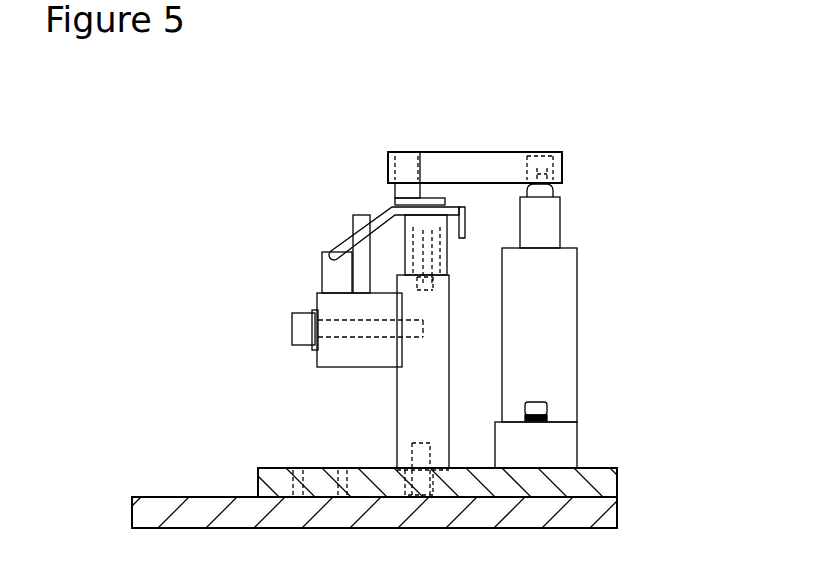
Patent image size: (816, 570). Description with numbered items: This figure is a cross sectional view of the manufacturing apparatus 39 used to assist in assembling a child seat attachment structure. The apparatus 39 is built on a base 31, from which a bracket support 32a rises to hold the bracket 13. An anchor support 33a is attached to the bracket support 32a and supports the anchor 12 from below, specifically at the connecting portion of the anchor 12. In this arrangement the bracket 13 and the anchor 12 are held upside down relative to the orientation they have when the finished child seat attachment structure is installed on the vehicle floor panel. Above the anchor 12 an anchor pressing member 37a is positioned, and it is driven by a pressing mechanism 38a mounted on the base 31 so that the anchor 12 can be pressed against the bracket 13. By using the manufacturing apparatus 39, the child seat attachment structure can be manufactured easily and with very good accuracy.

The anchor 12 is at (348, 240).
The bracket 13 is at (462, 216).
The base 31 is at (607, 515).
The bracket support 32a is at (400, 396).
The anchor support 33a is at (320, 272).
The anchor pressing member 37a is at (478, 150).
The pressing mechanism 38a is at (558, 327).
The manufacturing apparatus 39 is at (616, 262).